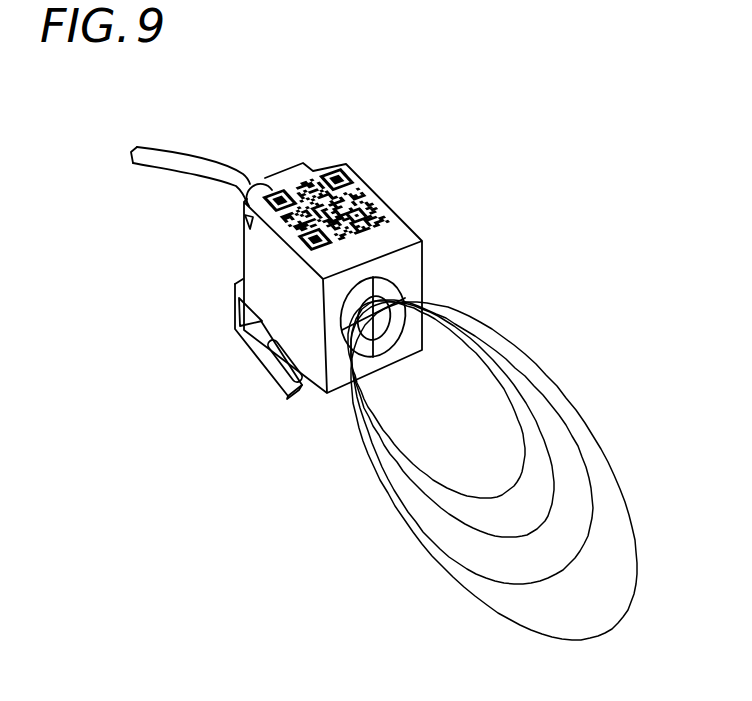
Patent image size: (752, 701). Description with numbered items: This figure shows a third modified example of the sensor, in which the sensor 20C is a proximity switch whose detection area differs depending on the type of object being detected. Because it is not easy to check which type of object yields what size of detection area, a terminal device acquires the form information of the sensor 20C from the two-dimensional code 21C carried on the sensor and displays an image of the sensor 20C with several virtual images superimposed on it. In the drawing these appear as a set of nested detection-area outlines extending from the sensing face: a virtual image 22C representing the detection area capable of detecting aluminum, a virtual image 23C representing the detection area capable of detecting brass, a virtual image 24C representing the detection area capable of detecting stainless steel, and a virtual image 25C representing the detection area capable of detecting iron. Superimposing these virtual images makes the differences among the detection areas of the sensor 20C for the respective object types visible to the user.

The sensor 20C is at (397, 242).
The two-dimensional code 21C is at (362, 208).
The virtual image 22C is at (637, 538).
The virtual image 23C is at (575, 498).
The virtual image 24C is at (540, 453).
The virtual image 25C is at (500, 411).